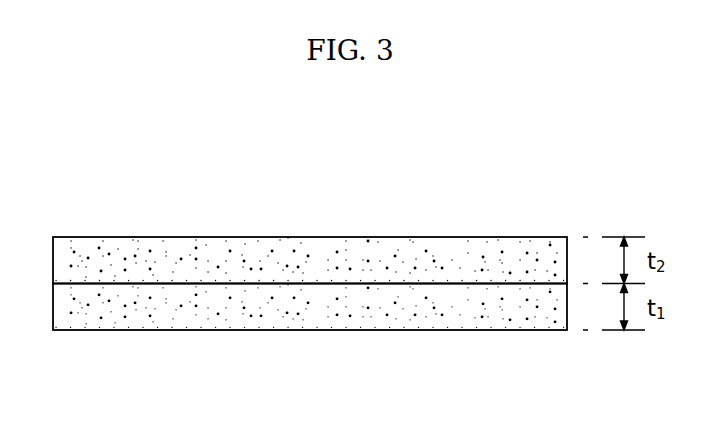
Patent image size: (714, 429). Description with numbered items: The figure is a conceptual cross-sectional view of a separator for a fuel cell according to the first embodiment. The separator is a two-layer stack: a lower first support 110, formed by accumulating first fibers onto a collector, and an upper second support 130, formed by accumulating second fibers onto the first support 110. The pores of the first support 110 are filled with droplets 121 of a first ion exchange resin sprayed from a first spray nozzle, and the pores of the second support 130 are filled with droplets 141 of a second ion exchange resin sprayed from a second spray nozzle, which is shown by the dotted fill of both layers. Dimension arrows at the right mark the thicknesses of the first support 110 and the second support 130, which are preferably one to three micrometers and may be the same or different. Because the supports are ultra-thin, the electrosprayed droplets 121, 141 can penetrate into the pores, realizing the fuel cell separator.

The first support 110 is at (318, 310).
The droplets of the first ion exchange resin 121 is at (246, 307).
The second support 130 is at (320, 243).
The droplets of the second ion exchange resin 141 is at (273, 251).